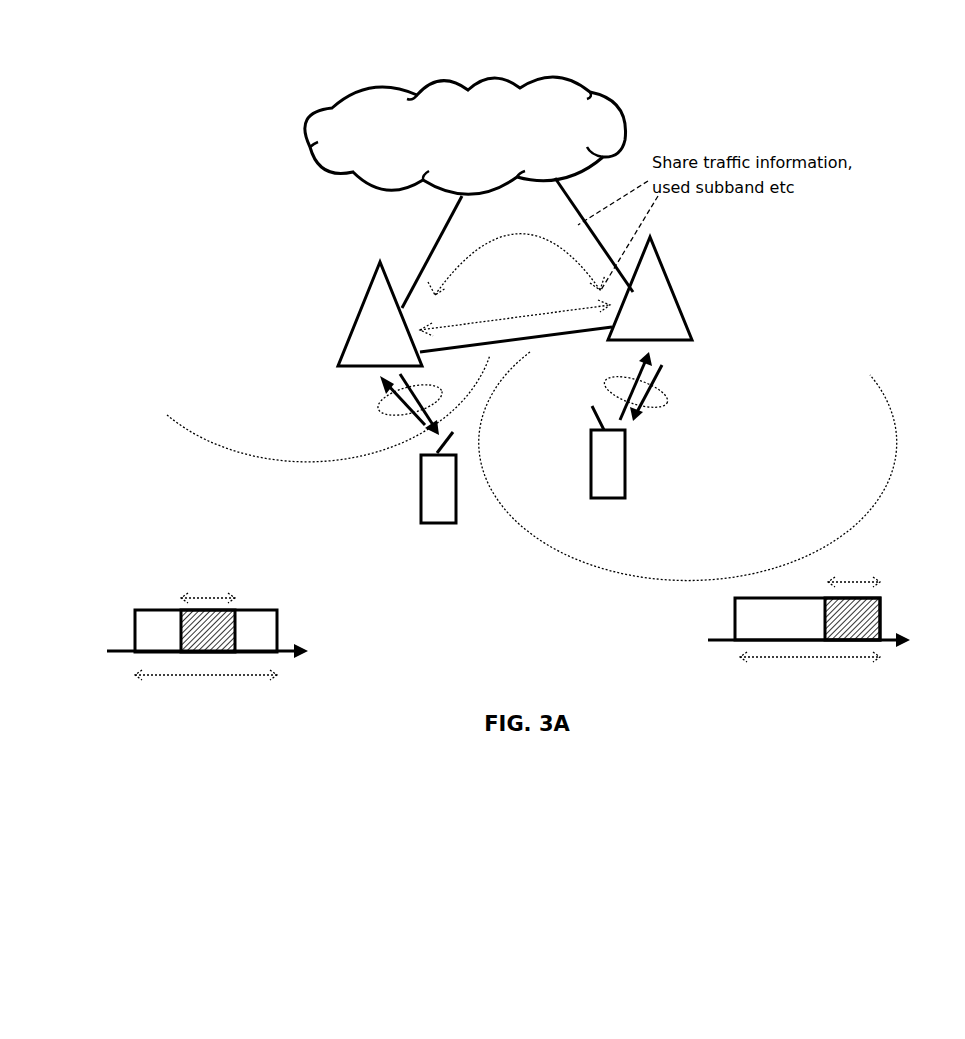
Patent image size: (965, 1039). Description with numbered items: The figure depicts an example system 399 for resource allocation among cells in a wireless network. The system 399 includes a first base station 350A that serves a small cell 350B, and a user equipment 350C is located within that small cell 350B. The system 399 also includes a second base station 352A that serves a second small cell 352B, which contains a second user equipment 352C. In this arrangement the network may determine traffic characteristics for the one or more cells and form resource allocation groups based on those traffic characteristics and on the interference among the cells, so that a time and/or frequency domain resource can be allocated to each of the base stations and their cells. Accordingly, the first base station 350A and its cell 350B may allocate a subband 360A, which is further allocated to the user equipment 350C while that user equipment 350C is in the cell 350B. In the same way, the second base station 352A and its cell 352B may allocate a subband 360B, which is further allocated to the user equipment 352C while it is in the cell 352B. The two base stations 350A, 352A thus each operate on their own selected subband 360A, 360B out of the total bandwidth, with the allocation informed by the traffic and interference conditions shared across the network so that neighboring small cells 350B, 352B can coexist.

The system 399 is at (469, 174).
The first base station 350A is at (358, 306).
The second base station 352A is at (670, 272).
The small cell 350B is at (392, 590).
The small cell 352B is at (893, 440).
The user equipment 350C is at (421, 495).
The user equipment 352C is at (627, 468).
The subband 360A is at (200, 625).
The subband 360B is at (855, 625).